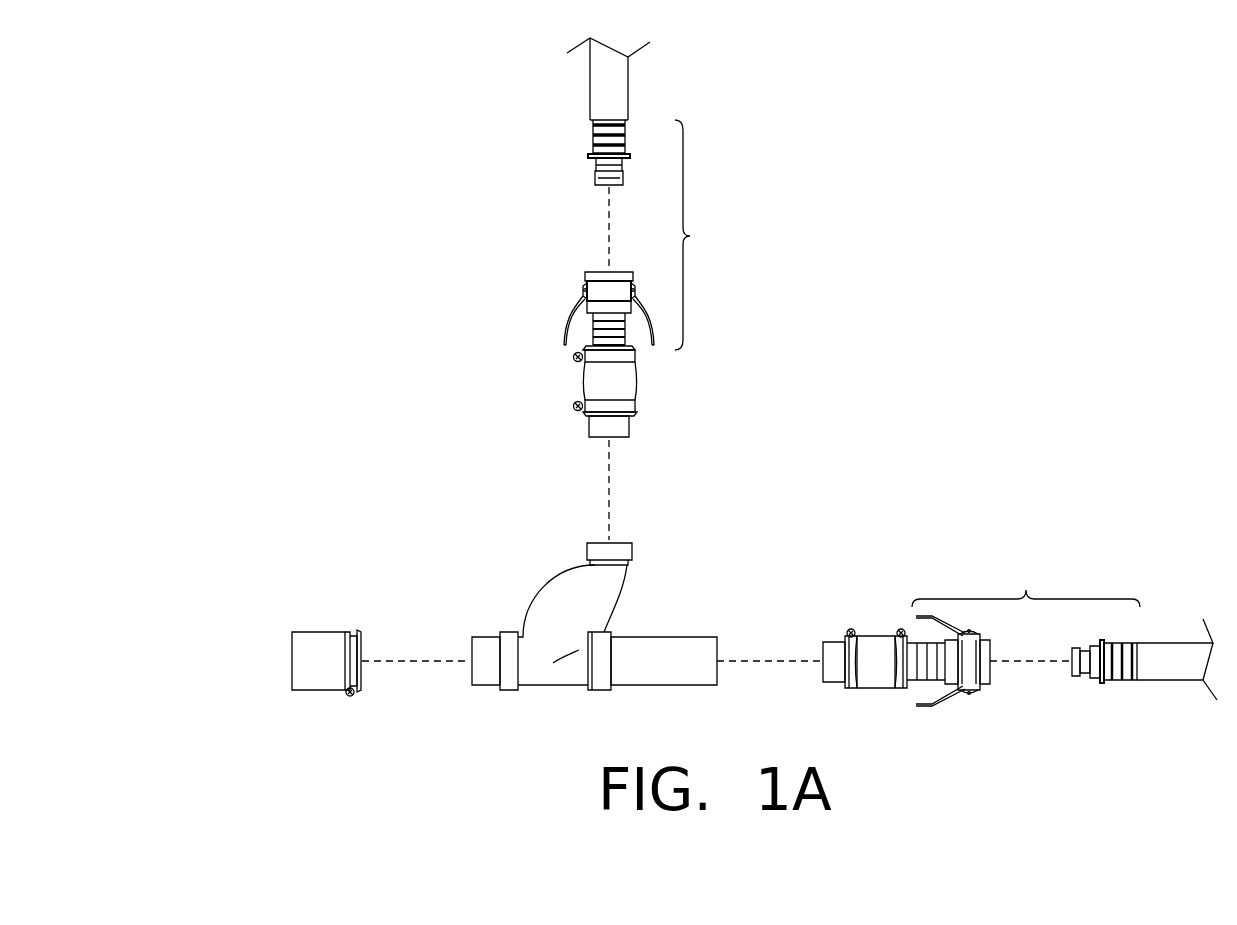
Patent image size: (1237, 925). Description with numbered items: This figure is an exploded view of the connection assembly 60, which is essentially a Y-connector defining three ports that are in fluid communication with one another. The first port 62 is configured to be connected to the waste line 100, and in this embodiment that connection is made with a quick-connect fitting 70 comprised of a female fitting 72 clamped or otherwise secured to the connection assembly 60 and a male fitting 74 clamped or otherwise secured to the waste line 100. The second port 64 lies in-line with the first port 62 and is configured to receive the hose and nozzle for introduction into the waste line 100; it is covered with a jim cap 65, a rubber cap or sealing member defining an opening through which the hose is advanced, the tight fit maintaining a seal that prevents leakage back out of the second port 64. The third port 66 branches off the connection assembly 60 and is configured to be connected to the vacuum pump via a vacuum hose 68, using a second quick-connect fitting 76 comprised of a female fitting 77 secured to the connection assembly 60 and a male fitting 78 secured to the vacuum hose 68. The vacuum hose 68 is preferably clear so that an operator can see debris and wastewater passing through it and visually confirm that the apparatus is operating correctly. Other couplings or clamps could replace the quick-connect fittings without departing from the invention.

The connection assembly 60 is at (200, 150).
The first port 62 is at (718, 672).
The second port 64 is at (470, 672).
The jim cap 65 is at (318, 636).
The third port 66 is at (622, 545).
The vacuum hose 68 is at (595, 70).
The quick-connect fitting 70 is at (1026, 582).
The female fitting 72 is at (970, 692).
The male fitting 74 is at (1105, 680).
The quick-connect fitting 76 is at (700, 235).
The female fitting 77 is at (583, 290).
The male fitting 78 is at (590, 157).
The waste line 100 is at (1160, 650).